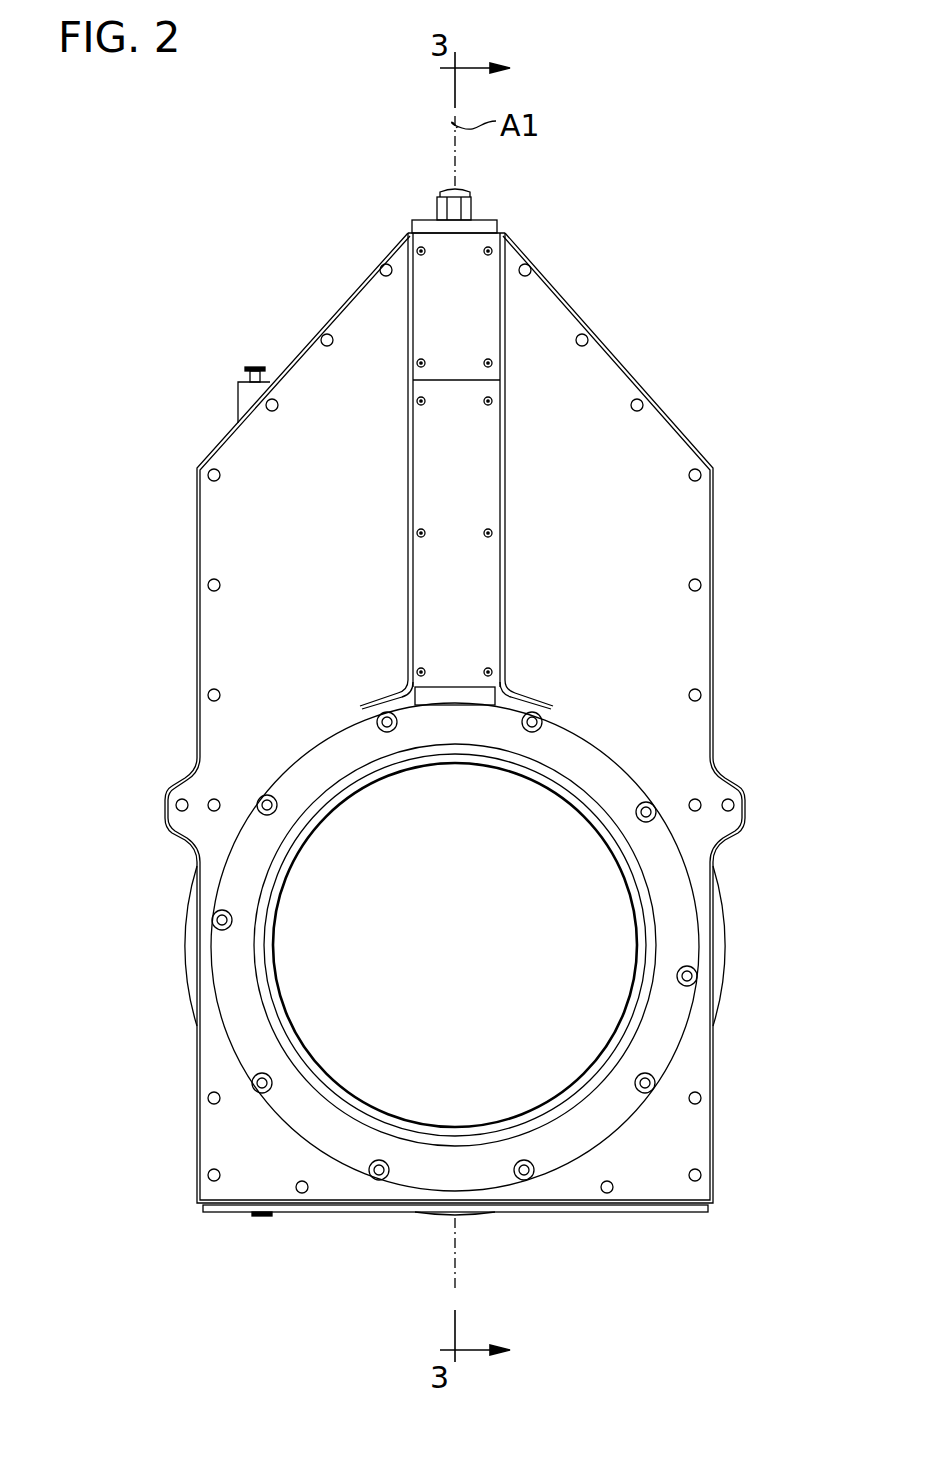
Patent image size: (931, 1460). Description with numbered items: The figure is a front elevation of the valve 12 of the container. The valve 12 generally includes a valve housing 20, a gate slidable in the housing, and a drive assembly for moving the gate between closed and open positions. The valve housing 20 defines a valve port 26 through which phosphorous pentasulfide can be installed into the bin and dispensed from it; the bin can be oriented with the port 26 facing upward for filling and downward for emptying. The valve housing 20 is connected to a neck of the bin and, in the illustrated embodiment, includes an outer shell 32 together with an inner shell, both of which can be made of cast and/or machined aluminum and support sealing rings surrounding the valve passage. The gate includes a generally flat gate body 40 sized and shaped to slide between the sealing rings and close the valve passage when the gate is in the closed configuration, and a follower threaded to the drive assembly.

The valve 12 is at (770, 327).
The valve housing 20 is at (715, 512).
The outer shell 32 is at (627, 463).
The valve port 26 is at (275, 961).
The gate body 40 is at (570, 930).